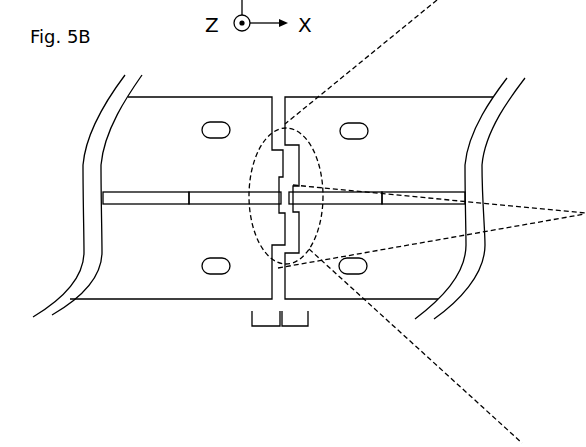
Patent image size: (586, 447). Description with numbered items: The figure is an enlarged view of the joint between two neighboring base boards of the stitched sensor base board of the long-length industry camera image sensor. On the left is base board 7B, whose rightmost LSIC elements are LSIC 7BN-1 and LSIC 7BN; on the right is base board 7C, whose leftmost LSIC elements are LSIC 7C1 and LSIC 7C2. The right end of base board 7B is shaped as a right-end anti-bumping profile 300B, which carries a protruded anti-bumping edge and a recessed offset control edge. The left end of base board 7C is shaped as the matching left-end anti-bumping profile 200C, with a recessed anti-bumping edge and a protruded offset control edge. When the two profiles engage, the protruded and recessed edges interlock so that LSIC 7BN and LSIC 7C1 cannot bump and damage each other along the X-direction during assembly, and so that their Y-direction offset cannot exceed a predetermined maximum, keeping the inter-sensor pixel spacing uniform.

The base board 7B is at (168, 154).
The base board 7C is at (422, 154).
The LSIC 7BN-1 is at (153, 200).
The LSIC 7BN is at (233, 200).
The LSIC 7C1 is at (350, 200).
The LSIC 7C2 is at (430, 197).
The right-end anti-bumping profile 300B is at (265, 326).
The left-end anti-bumping profile 200C is at (296, 326).